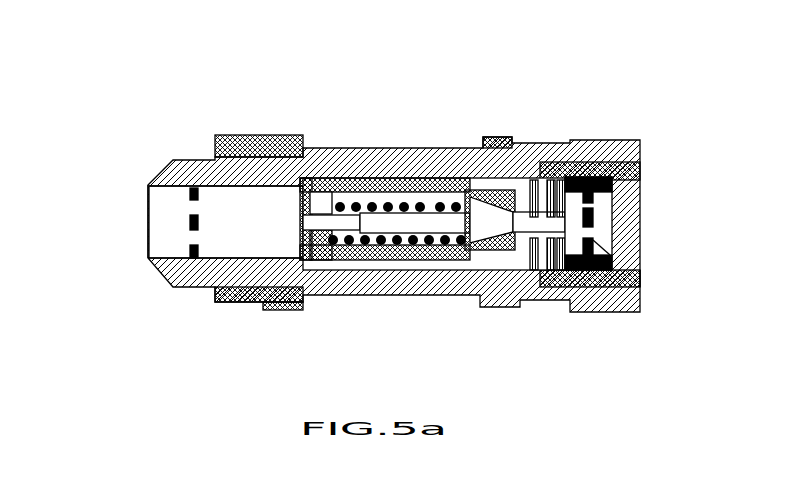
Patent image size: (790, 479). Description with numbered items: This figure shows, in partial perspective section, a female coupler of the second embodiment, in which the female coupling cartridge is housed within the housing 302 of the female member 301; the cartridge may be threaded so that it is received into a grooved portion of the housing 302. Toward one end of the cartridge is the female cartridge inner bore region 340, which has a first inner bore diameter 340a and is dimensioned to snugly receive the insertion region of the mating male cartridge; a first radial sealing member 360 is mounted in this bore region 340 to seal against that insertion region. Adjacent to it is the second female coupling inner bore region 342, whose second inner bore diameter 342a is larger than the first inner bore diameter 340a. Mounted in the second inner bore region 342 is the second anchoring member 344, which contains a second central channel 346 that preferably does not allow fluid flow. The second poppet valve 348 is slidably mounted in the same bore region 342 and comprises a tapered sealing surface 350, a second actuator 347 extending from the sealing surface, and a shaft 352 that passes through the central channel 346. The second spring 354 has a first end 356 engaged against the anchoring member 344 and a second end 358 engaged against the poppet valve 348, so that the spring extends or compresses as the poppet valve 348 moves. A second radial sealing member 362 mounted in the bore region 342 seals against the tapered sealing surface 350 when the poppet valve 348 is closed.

The female member 301 is at (140, 166).
The housing 302 is at (352, 148).
The female cartridge inner bore region 340 is at (597, 228).
The first inner bore diameter 340a is at (645, 275).
The second female coupling inner bore region 342 is at (240, 222).
The second inner bore diameter 342a is at (190, 228).
The second anchoring member 344 is at (316, 257).
The second central channel 346 is at (303, 212).
The second actuator 347 is at (532, 218).
The second poppet valve 348 is at (480, 213).
The tapered sealing surface 350 is at (500, 240).
The shaft 352 is at (333, 225).
The second spring 354 is at (382, 243).
The first end 356 is at (340, 205).
The second end 358 is at (450, 244).
The first radial sealing member 360 is at (587, 173).
The second radial sealing member 362 is at (483, 192).